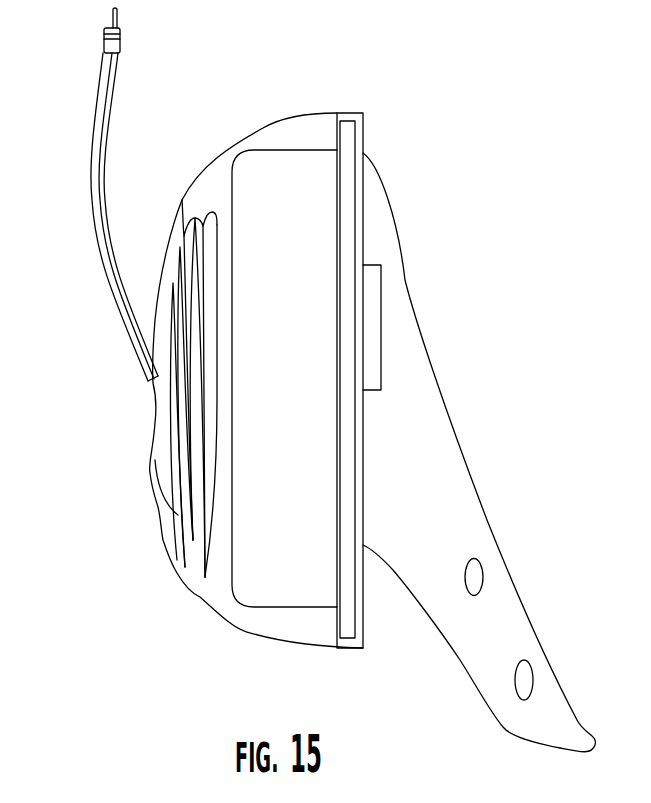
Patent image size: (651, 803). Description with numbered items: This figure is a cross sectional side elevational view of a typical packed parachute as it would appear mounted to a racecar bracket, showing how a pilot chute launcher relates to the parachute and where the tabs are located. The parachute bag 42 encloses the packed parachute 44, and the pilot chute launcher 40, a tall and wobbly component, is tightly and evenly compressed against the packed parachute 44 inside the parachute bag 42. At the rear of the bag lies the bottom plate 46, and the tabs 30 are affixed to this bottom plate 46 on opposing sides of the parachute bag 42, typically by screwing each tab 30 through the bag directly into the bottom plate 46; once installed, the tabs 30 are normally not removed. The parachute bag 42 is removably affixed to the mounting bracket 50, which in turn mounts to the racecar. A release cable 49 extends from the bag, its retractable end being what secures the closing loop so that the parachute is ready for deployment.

The tab 30 is at (381, 300).
The pilot chute launcher 40 is at (176, 453).
The parachute bag 42 is at (304, 114).
The packed parachute 44 is at (273, 192).
The bottom plate 46 is at (348, 537).
The release cable 49 is at (103, 75).
The mounting bracket 50 is at (442, 455).